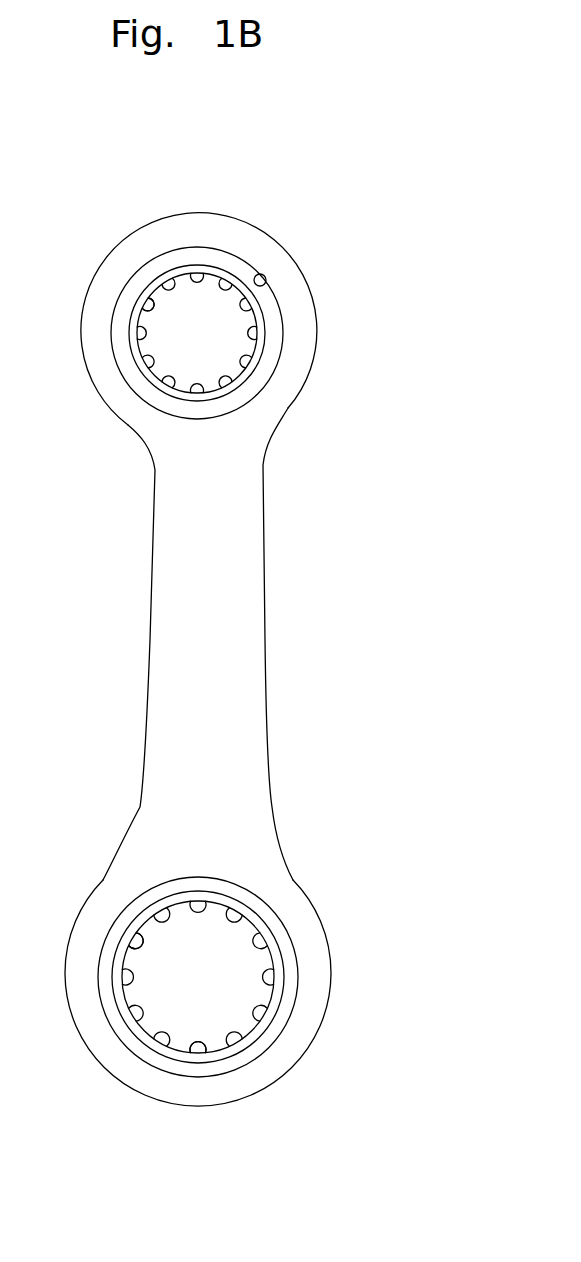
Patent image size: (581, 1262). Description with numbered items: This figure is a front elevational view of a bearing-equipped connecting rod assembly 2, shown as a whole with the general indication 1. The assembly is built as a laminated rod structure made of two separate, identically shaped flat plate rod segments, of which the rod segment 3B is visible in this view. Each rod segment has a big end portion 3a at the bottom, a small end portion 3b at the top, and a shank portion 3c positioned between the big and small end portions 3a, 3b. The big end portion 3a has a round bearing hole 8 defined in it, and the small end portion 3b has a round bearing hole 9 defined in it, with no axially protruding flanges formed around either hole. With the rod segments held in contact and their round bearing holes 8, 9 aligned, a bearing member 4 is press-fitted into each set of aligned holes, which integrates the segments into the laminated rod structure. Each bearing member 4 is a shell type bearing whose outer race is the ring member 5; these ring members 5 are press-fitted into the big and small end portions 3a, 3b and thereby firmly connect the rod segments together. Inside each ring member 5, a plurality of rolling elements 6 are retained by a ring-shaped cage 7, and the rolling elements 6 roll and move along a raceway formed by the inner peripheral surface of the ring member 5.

The connecting rod 1 is at (355, 228).
The connecting rod assembly 2 is at (270, 617).
The big end portion 3a is at (288, 1050).
The small end portion 3b is at (232, 247).
The rod segment 3B is at (268, 683).
The shank portion 3c is at (233, 727).
The bearing member 4 is at (290, 355).
The ring member 5 is at (256, 388).
The rolling element 6 is at (178, 400).
The ring-shaped cage 7 is at (145, 312).
The round bearing hole 8 is at (205, 1050).
The round bearing hole 9 is at (266, 282).